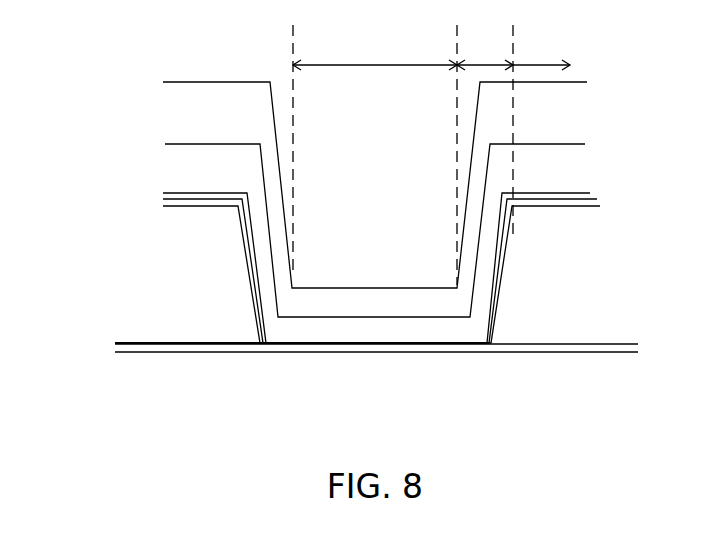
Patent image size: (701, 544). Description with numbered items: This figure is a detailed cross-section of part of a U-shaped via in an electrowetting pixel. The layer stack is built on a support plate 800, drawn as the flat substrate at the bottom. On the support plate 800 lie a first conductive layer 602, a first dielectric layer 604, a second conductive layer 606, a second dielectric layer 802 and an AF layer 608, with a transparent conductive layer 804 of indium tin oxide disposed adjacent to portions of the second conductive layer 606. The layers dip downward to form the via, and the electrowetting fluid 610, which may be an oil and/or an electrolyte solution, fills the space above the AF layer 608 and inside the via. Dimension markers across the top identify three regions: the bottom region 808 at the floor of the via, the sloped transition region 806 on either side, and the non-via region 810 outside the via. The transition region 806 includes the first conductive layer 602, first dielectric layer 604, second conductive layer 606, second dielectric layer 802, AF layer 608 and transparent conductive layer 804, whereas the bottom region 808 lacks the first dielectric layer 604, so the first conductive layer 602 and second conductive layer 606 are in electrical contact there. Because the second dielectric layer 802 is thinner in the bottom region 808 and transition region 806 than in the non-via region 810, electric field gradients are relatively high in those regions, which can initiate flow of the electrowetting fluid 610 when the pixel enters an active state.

The support plate 800 is at (353, 387).
The first conductive layer 602 is at (115, 348).
The transparent conductive layer 804 is at (163, 201).
The second conductive layer 606 is at (163, 193).
The first dielectric layer 604 is at (170, 304).
The second dielectric layer 802 is at (195, 176).
The AF layer 608 is at (193, 122).
The electrowetting fluid 610 is at (223, 29).
The bottom region 808 is at (375, 155).
The transition region 806 is at (485, 132).
The non-via region 810 is at (541, 56).